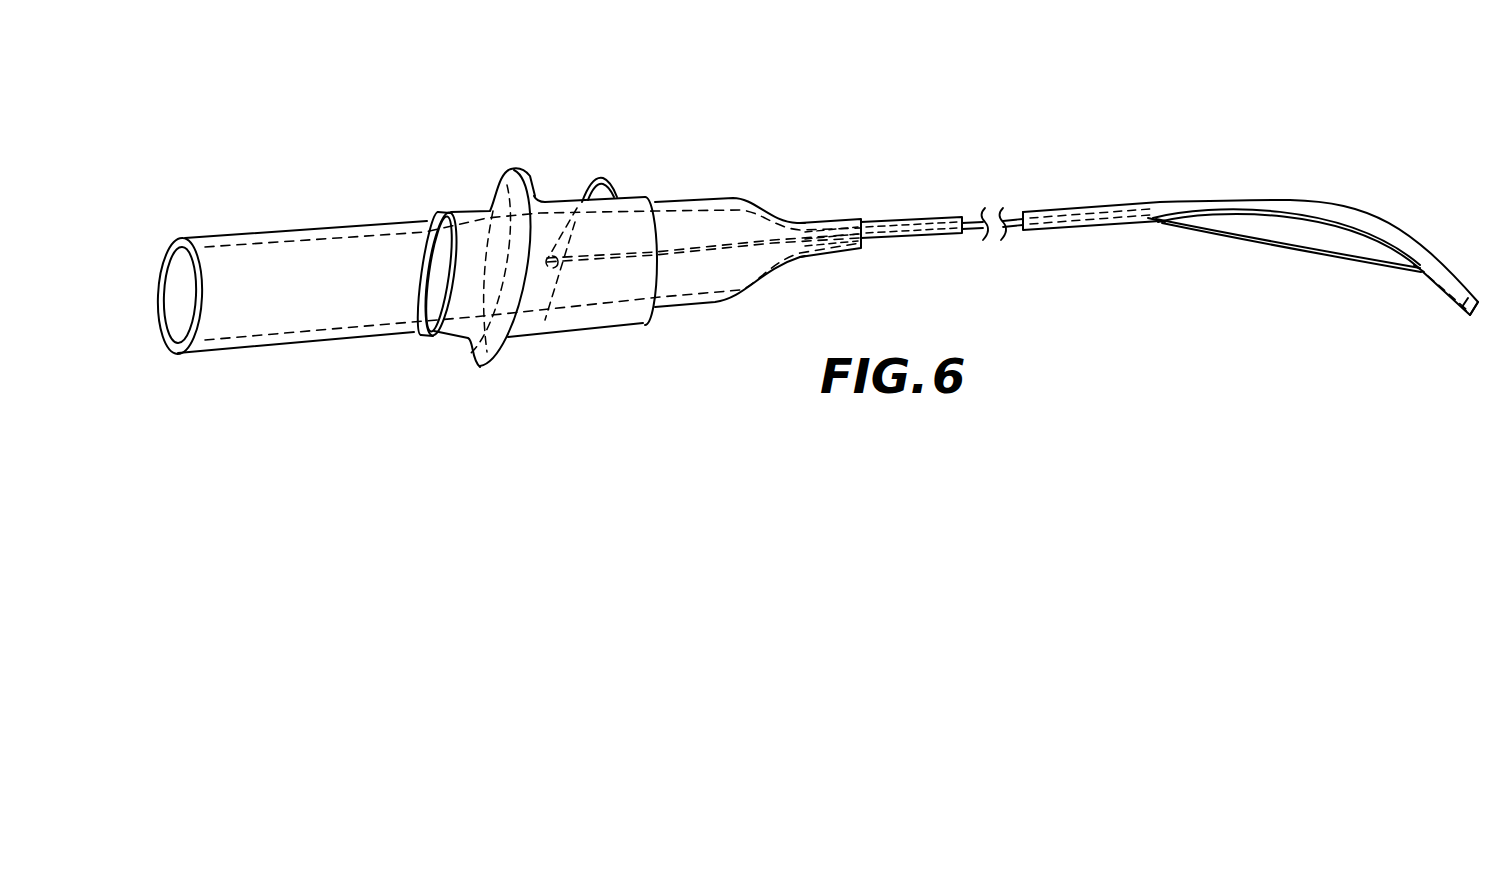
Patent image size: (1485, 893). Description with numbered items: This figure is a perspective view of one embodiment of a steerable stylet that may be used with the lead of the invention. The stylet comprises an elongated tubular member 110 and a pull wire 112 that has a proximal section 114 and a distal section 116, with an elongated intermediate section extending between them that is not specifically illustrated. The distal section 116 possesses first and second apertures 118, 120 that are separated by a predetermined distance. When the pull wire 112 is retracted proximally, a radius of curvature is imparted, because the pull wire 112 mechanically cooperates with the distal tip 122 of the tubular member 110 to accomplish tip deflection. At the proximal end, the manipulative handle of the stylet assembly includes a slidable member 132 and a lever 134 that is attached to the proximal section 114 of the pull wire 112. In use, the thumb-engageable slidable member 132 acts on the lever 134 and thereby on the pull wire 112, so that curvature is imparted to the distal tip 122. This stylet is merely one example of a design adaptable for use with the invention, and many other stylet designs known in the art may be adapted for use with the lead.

The elongated tubular member 110 is at (1073, 206).
The pull wire 112 is at (1012, 212).
The proximal section 114 is at (933, 204).
The distal section 116 is at (1444, 184).
The first aperture 118 is at (1163, 222).
The second aperture 120 is at (1418, 271).
The distal tip 122 is at (1458, 300).
The slidable member 132 is at (618, 330).
The lever 134 is at (597, 182).